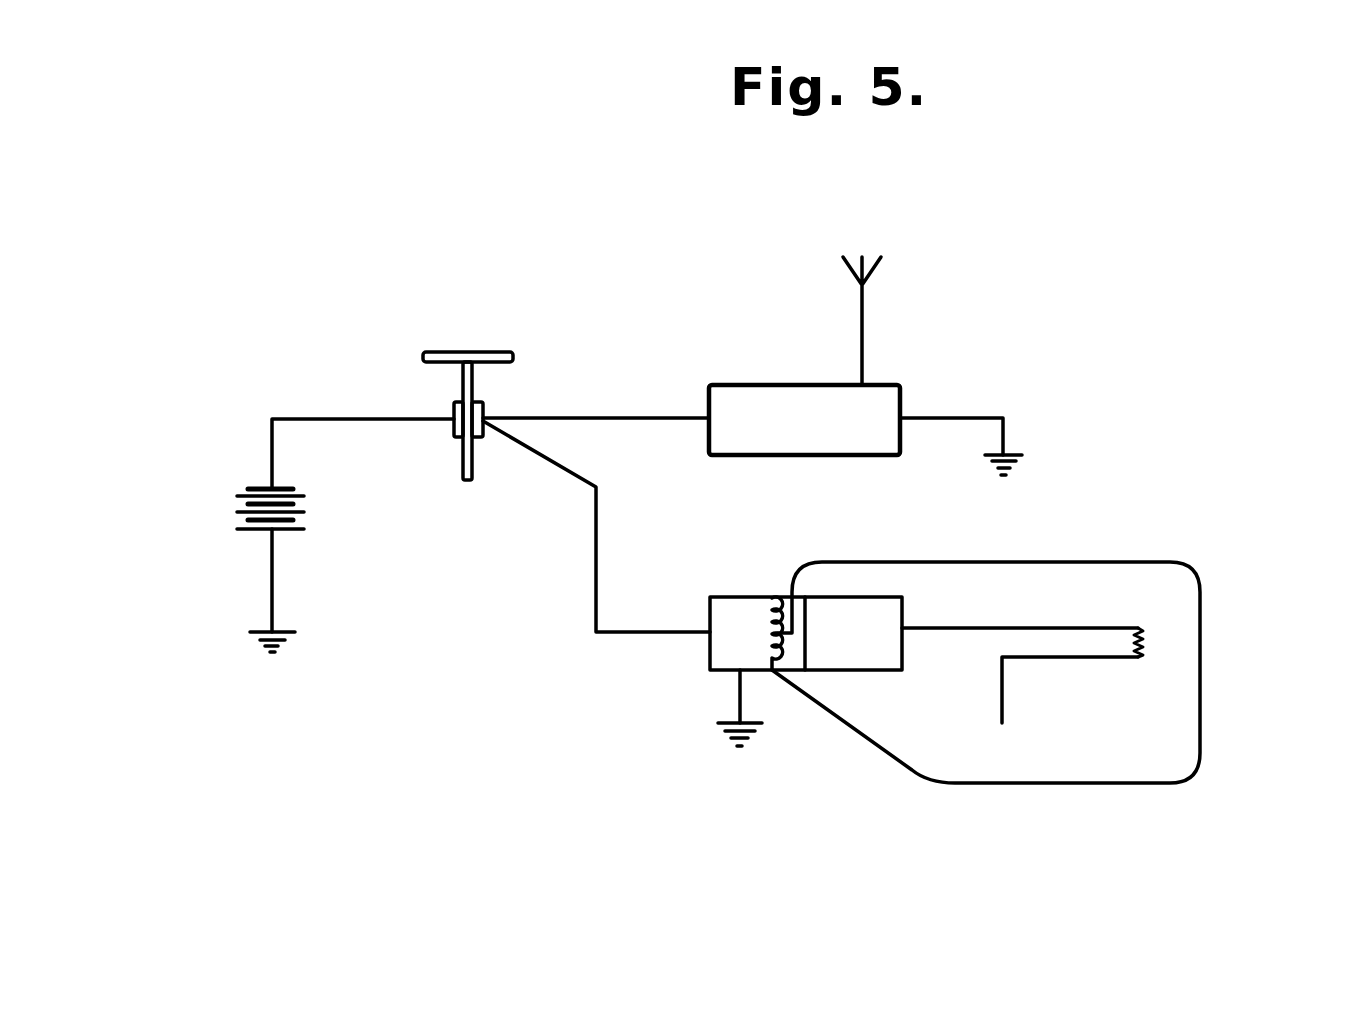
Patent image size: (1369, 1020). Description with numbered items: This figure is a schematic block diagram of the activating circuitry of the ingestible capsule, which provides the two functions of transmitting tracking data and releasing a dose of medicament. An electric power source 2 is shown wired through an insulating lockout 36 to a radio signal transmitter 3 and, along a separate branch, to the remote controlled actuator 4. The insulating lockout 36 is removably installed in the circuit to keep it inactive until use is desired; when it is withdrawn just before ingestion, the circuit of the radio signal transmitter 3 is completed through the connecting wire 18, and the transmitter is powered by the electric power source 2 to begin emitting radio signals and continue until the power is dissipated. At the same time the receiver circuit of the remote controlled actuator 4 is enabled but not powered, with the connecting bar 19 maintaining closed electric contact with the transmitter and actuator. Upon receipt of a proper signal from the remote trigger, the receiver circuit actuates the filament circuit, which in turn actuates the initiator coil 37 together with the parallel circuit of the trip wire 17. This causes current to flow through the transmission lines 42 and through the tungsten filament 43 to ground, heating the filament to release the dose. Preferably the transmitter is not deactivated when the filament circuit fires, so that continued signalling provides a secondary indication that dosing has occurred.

The electric power source 2 is at (236, 504).
The insulating lockout 36 is at (463, 376).
The radio signal transmitter 3 is at (750, 386).
The remote controlled actuator 4 is at (728, 655).
The connecting wire 18 is at (716, 612).
The initiator coil 37 is at (766, 623).
The connecting bar 19 is at (850, 655).
The trip wire 17 is at (1200, 670).
The transmission lines 42 is at (1056, 628).
The tungsten filament 43 is at (1145, 641).